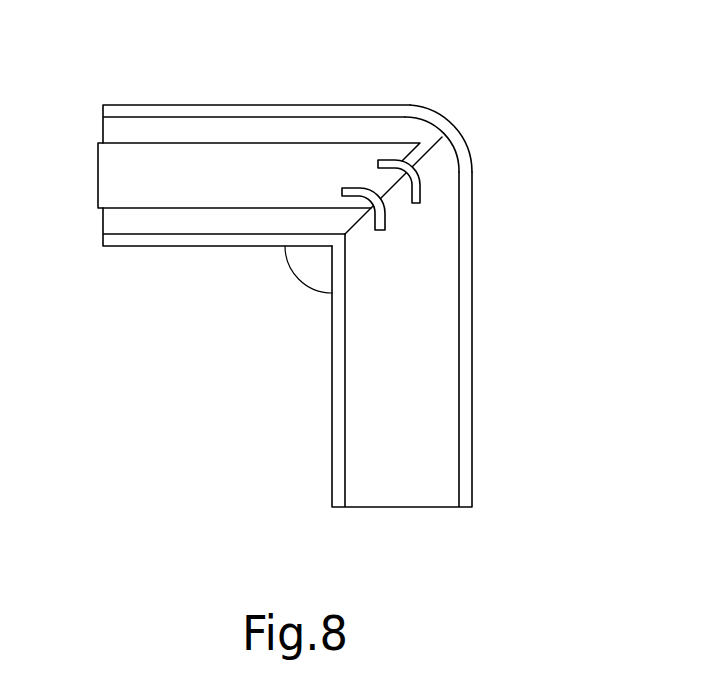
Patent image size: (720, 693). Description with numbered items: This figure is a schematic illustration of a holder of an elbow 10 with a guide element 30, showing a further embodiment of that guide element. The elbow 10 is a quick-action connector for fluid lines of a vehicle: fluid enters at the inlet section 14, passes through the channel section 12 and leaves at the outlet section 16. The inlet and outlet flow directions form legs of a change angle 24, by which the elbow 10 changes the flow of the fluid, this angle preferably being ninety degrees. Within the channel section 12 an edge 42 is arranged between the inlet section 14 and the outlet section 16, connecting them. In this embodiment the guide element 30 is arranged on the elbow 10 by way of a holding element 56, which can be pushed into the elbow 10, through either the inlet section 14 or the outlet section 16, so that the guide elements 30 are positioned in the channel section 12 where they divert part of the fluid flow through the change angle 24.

The elbow 10 is at (603, 105).
The channel section 12 is at (457, 142).
The inlet section 14 is at (165, 105).
The outlet section 16 is at (472, 400).
The change angle 24 is at (303, 270).
The guide element 30 is at (386, 221).
The edge 42 is at (347, 236).
The holding element 56 is at (118, 172).